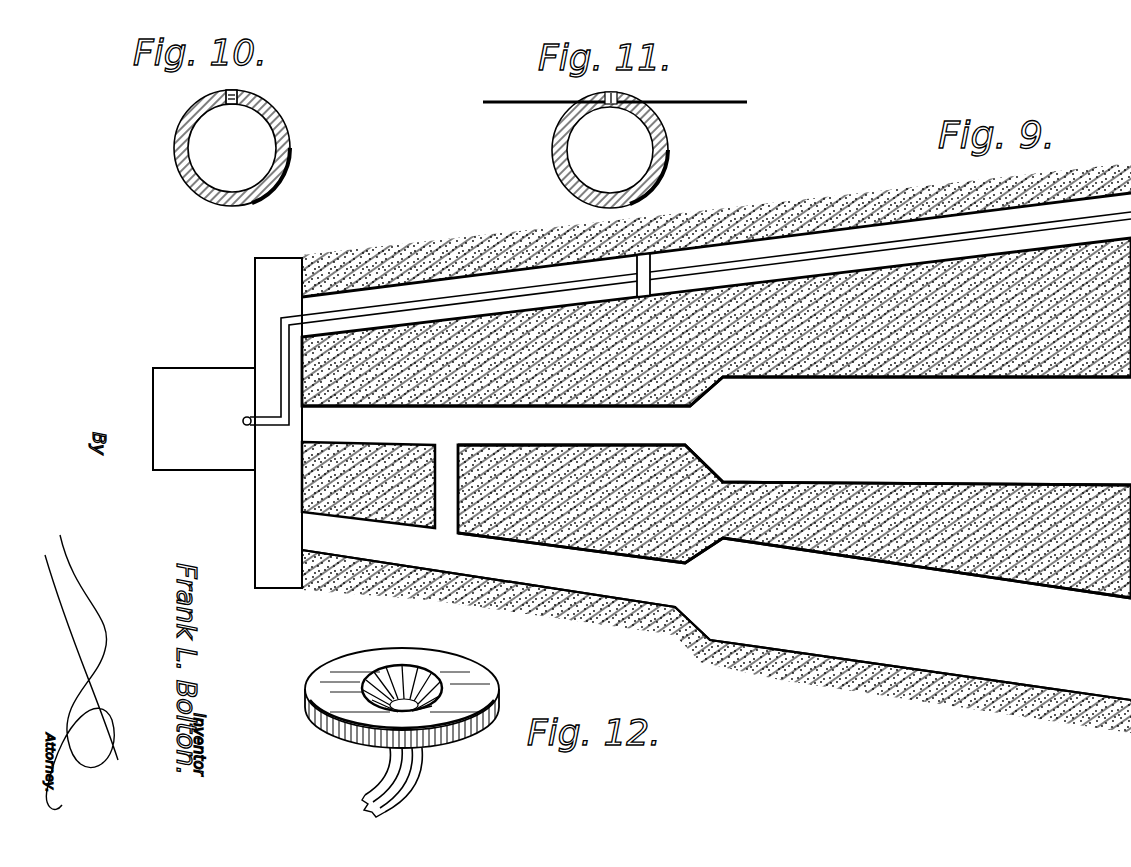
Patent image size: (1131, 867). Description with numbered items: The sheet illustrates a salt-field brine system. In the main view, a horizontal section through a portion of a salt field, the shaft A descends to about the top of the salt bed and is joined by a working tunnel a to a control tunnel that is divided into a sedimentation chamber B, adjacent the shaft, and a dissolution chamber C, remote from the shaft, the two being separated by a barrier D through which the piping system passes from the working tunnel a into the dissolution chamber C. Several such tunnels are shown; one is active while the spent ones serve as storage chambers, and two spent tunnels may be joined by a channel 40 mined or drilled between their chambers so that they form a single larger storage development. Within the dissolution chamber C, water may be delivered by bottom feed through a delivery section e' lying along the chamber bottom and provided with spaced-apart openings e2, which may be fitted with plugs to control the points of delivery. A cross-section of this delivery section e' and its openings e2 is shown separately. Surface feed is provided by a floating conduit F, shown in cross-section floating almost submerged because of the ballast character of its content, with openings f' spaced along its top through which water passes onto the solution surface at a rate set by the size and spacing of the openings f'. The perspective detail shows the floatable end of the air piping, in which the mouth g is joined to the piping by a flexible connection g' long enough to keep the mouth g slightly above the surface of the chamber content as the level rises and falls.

In FIG. 9, the shaft A is at (204, 419).
In FIG. 9, the working tunnel a is at (278, 423).
In FIG. 9, the sedimentation chamber B is at (400, 295).
In FIG. 9, the dissolution chamber C is at (718, 248).
In FIG. 9, the barrier D is at (652, 264).
In FIG. 9, the channel 40 is at (468, 494).
In FIG. 10, the delivery section e' is at (253, 148).
In FIG. 10, the openings e2 is at (226, 95).
In FIG. 11, the floating conduit F is at (668, 152).
In FIG. 11, the openings f' is at (582, 86).
In FIG. 12, the mouth g is at (402, 682).
In FIG. 12, the flexible connection g' is at (415, 782).